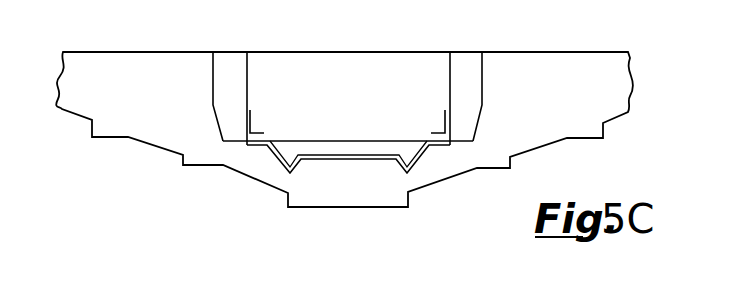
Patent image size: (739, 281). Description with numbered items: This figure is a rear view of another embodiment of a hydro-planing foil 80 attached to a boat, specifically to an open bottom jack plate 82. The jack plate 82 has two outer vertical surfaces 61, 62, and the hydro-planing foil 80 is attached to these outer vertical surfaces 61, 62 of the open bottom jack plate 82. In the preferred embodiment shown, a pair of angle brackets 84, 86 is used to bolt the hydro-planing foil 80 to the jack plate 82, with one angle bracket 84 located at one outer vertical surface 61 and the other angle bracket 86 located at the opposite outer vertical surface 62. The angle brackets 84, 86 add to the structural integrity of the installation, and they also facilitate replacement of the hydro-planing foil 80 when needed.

The hydro-planing foil 80 is at (347, 161).
The open bottom jack plate 82 is at (365, 95).
The outer vertical surface 61 is at (247, 86).
The outer vertical surface 62 is at (450, 86).
The angle bracket 84 is at (250, 122).
The angle bracket 86 is at (445, 122).